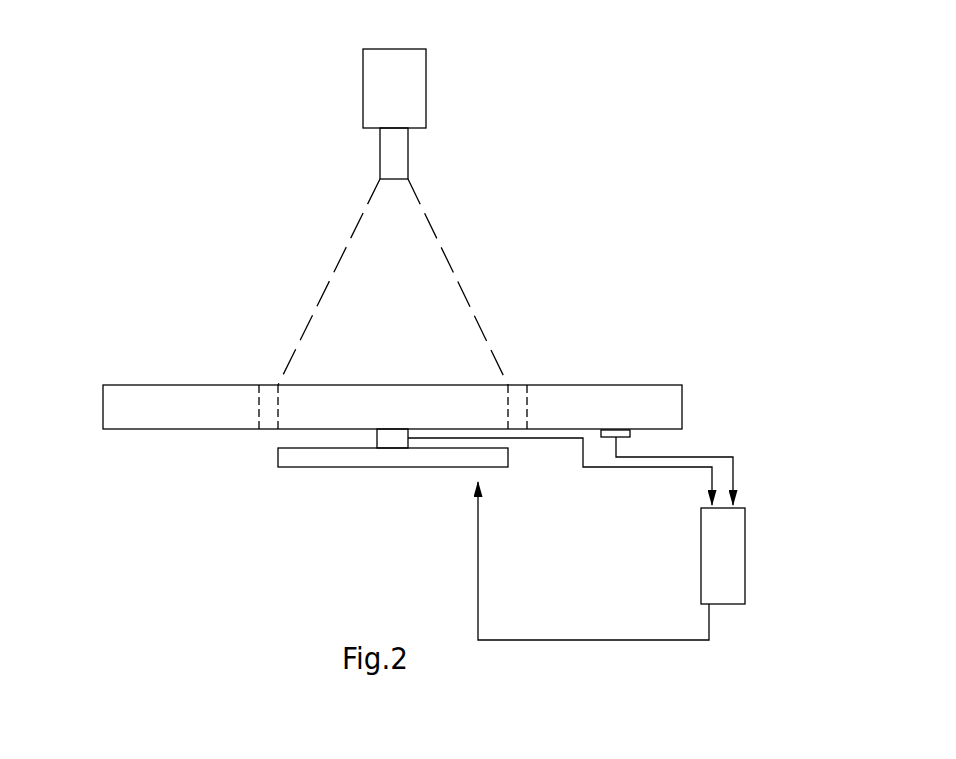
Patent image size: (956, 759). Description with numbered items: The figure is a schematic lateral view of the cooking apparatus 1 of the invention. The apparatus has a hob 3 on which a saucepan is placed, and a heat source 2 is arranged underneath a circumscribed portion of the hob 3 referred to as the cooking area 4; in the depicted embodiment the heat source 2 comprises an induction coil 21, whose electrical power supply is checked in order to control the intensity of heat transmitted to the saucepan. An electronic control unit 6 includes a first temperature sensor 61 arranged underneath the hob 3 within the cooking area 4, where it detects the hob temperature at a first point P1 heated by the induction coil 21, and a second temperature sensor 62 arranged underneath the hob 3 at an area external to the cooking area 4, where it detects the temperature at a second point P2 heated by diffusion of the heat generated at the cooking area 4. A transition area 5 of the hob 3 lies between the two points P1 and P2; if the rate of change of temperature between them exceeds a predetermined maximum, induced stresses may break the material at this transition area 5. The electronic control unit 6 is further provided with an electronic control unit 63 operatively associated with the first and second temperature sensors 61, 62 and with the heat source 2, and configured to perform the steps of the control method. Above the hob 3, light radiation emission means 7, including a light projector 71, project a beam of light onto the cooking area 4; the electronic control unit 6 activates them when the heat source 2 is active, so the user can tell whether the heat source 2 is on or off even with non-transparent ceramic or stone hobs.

The cooking apparatus 1 is at (702, 230).
The heat source 2 is at (493, 544).
The hob 3 is at (116, 356).
The cooking area 4 is at (487, 402).
The transition area 5 is at (270, 400).
The electronic control unit 6 is at (597, 477).
The light radiation emission means 7 is at (419, 208).
The induction coil 21 is at (393, 462).
The first temperature sensor 61 is at (385, 440).
The second temperature sensor 62 is at (630, 434).
The electronic control unit 63 is at (732, 585).
The light projector 71 is at (408, 68).
The first point P1 is at (392, 428).
The second point P2 is at (612, 433).